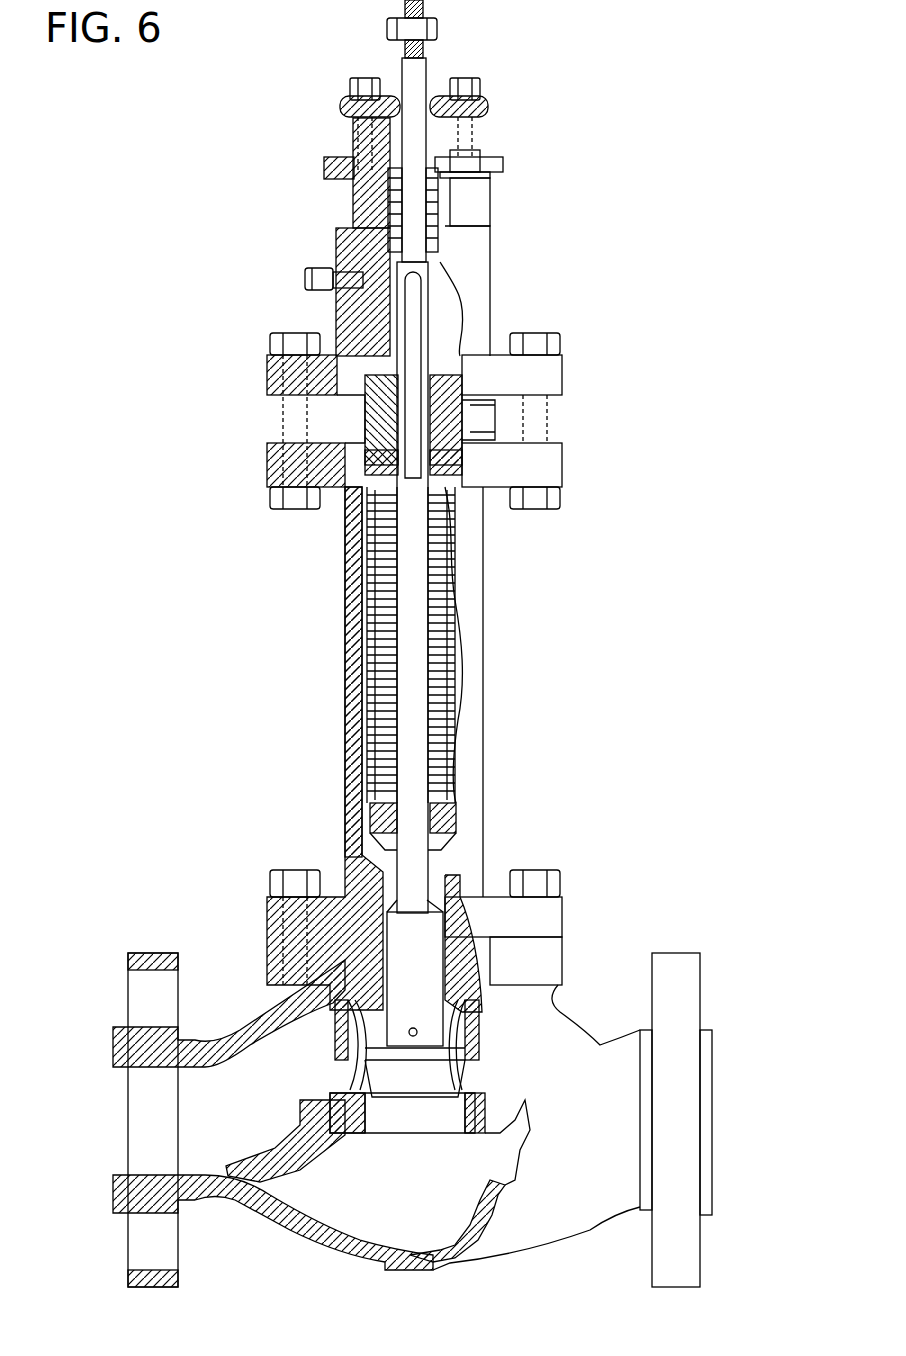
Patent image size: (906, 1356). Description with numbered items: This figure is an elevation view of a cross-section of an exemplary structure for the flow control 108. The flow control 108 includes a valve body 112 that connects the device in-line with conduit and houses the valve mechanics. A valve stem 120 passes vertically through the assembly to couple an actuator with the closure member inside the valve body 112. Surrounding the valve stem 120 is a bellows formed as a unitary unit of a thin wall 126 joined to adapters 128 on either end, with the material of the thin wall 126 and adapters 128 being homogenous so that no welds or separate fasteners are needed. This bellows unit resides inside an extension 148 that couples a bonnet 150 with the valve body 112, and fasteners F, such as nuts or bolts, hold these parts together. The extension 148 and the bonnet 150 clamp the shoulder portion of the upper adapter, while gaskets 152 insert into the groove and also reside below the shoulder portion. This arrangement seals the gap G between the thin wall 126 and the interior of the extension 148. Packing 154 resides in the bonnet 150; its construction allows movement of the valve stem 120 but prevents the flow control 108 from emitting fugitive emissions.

The flow control 108 is at (604, 150).
The valve body 112 is at (676, 1287).
The valve stem 120 is at (420, 866).
The thin wall 126 is at (456, 630).
The adapters 128 is at (456, 450).
The extension 148 is at (497, 657).
The bonnet 150 is at (505, 271).
The gaskets 152 is at (350, 440).
The packing 154 is at (352, 214).
The fasteners F is at (290, 321).
The gap G is at (372, 732).